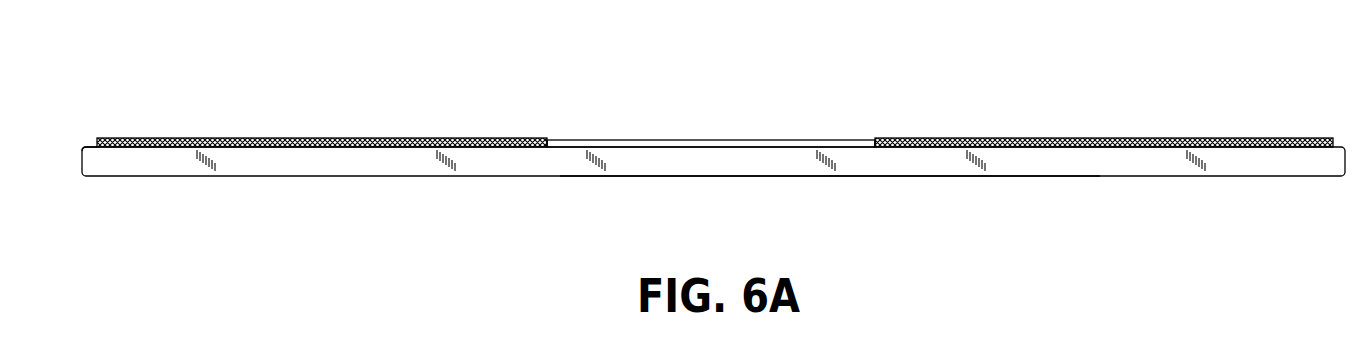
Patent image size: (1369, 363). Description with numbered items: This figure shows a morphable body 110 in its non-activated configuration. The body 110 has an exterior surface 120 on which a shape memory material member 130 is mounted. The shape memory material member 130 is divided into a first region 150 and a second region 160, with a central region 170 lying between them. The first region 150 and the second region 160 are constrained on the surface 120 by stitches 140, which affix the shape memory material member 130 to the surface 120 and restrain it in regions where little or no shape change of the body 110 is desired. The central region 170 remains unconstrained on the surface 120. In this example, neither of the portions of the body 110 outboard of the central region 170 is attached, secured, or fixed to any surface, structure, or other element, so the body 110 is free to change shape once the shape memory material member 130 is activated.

The body 110 is at (1340, 101).
The surface 120 is at (93, 146).
The shape memory material member 130 is at (705, 140).
The stitches 140 is at (545, 144).
The first region 150 is at (97, 137).
The second region 160 is at (1333, 137).
The central region 170 is at (875, 135).